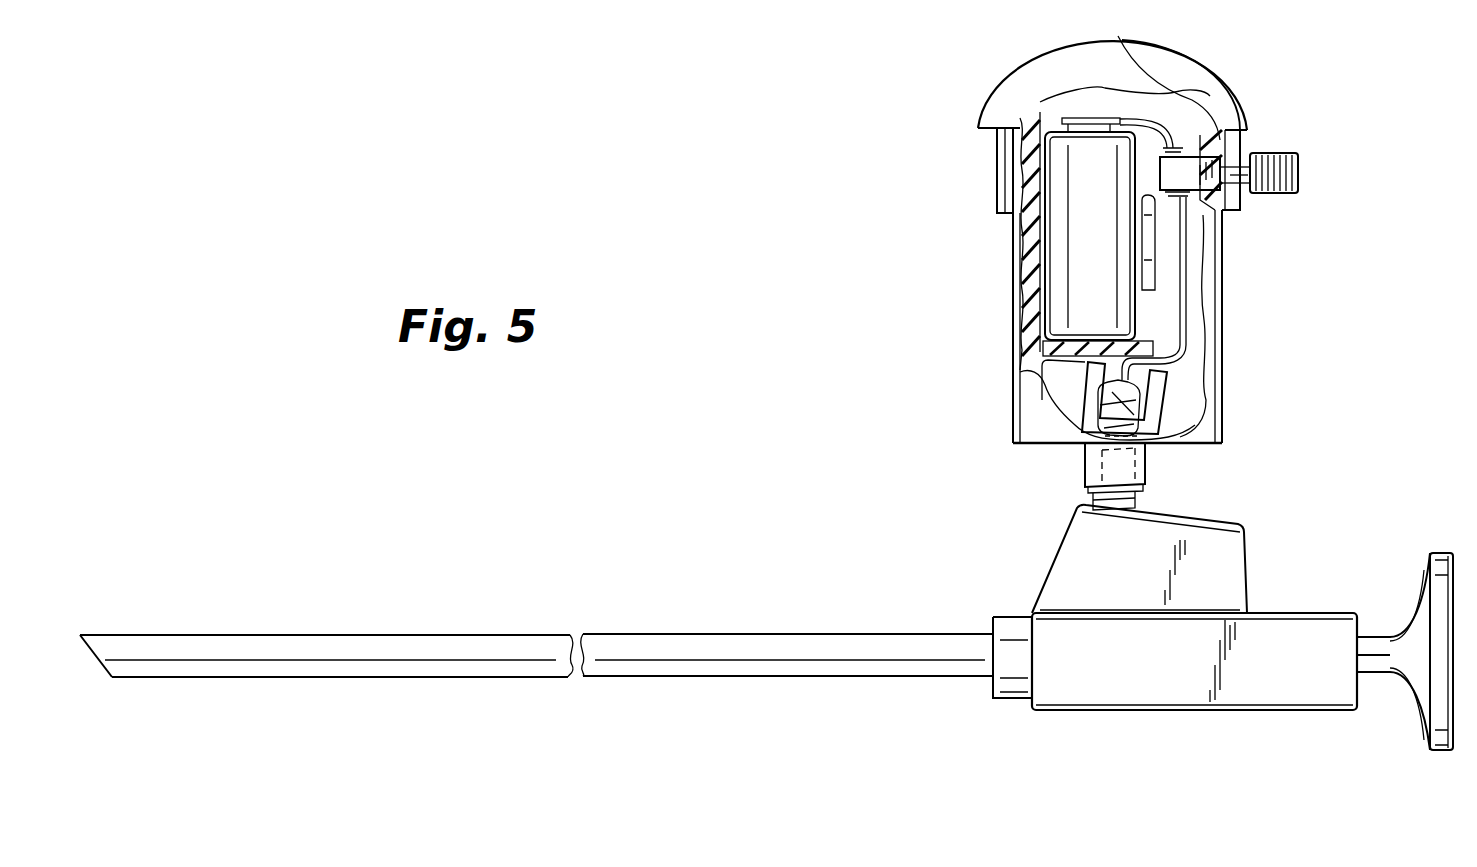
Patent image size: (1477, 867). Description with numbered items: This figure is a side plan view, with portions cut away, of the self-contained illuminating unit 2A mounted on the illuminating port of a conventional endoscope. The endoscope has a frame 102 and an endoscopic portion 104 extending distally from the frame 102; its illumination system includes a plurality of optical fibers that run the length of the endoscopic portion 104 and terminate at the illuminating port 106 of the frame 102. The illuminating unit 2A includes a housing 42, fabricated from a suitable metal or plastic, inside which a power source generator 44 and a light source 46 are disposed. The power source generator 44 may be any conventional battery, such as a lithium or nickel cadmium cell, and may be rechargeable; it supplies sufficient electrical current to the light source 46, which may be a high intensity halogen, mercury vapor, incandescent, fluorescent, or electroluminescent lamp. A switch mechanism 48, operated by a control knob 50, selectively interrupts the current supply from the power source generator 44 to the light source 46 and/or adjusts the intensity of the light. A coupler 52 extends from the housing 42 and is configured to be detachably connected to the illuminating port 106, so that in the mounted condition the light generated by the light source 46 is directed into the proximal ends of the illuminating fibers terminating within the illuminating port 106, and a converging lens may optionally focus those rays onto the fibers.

The cartridge assembly 2A is at (1275, 288).
The housing 42 is at (995, 178).
The power source generator 44 is at (1085, 262).
The light source 46 is at (1135, 415).
The switch mechanism 48 is at (1207, 155).
The control knob 50 is at (1302, 168).
The coupler 52 is at (1087, 473).
The frame 102 is at (1152, 674).
The endoscopic portion 104 is at (406, 656).
The illuminating port 106 is at (1150, 481).